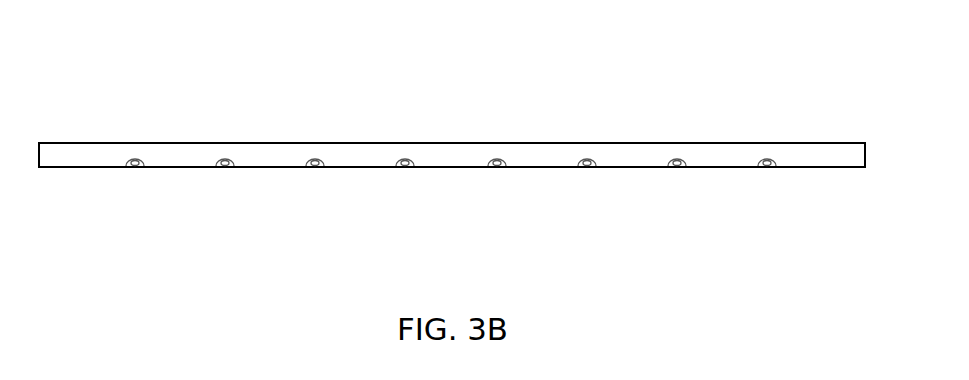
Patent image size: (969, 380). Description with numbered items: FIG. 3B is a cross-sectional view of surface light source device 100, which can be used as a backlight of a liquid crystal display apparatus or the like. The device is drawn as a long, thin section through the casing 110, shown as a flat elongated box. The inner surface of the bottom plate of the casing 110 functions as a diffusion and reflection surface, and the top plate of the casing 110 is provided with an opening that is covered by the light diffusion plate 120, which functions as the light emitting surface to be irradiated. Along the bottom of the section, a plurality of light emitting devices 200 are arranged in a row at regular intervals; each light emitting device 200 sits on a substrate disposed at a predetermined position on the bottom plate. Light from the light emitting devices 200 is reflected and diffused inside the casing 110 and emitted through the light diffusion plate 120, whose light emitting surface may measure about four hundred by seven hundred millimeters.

The surface light source device 100 is at (861, 50).
The casing 110 is at (52, 143).
The light diffusion plate 120 is at (302, 143).
The light emitting device 200 is at (493, 157).